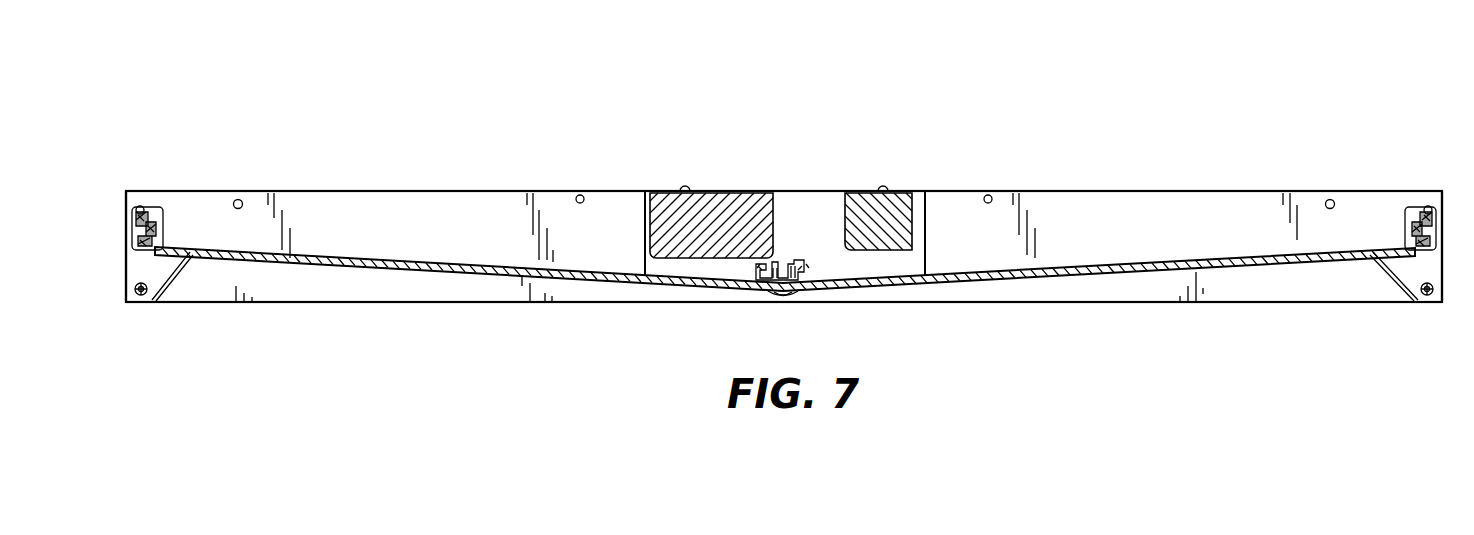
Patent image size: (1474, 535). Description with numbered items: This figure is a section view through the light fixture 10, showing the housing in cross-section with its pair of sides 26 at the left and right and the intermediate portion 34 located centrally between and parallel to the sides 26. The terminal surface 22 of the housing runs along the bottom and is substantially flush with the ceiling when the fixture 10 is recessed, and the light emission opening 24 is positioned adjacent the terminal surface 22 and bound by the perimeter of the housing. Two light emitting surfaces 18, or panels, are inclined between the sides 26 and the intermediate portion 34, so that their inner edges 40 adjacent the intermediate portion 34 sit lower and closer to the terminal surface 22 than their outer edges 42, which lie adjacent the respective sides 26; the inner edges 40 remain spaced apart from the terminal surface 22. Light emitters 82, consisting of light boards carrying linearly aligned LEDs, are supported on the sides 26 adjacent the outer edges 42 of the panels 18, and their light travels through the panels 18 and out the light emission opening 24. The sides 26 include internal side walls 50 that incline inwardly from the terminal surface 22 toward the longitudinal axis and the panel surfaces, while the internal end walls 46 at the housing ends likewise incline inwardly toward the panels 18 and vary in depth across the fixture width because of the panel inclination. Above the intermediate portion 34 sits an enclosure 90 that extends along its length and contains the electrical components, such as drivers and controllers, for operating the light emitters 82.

The light fixture 10 is at (1097, 112).
The light emitting surfaces 18 is at (412, 253).
The terminal surface 22 is at (1200, 303).
The light emission opening 24 is at (1293, 269).
The sides 26 is at (131, 250).
The intermediate portion 34 is at (783, 297).
The inner edges 40 is at (785, 280).
The outer edges 42 is at (136, 272).
The internal end walls 46 is at (1122, 287).
The internal side walls 50 is at (172, 284).
The light emitters 82 is at (164, 250).
The enclosure 90 is at (927, 218).